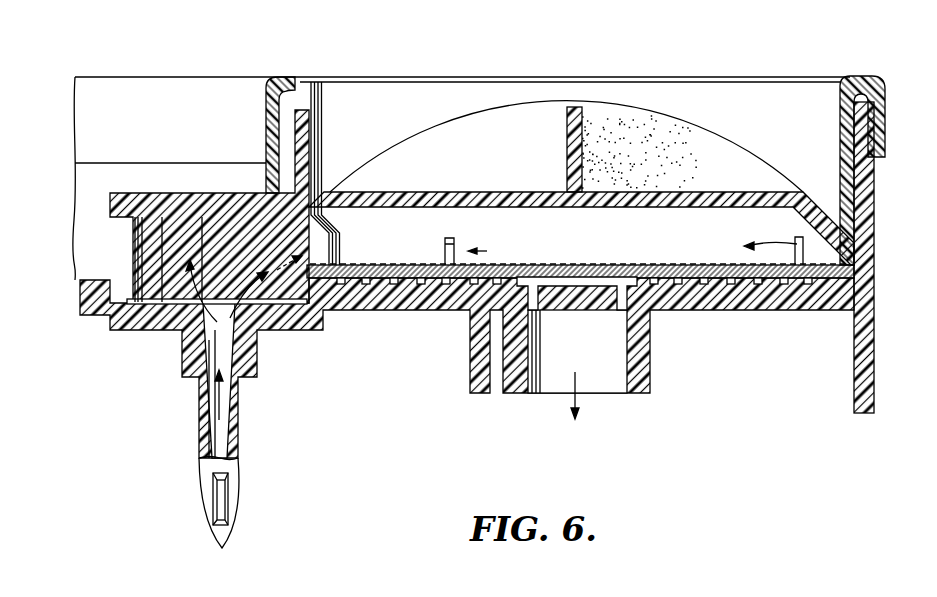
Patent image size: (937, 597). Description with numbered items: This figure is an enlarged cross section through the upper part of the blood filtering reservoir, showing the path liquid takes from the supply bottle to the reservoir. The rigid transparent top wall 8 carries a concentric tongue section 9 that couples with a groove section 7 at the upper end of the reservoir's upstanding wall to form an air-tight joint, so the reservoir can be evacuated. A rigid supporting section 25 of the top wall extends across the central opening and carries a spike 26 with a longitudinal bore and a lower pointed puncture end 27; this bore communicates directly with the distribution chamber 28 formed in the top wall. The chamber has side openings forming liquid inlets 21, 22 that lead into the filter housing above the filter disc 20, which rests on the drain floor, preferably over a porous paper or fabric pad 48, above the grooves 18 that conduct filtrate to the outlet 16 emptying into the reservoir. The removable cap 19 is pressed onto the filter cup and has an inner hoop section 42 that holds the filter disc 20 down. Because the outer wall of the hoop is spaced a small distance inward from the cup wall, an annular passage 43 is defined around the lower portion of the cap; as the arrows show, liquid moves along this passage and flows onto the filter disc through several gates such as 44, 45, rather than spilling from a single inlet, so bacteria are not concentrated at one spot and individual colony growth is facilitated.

The groove section 7 is at (43, 280).
The top wall 8 is at (874, 329).
The tongue section 9 is at (866, 368).
The outlet 16 is at (623, 283).
The grooves 18 is at (466, 285).
The removable cap 19 is at (831, 71).
The filter disc 20 is at (674, 263).
The liquid inlet 21 is at (180, 232).
The liquid inlet 22 is at (303, 249).
The supporting section 25 is at (104, 315).
The spike 26 is at (239, 433).
The puncture end 27 is at (222, 548).
The distribution chamber 28 is at (157, 207).
The inner hoop section 42 is at (318, 248).
The annular passage 43 is at (323, 205).
The gate 44 is at (453, 240).
The gate 45 is at (798, 238).
The pad 48 is at (747, 284).